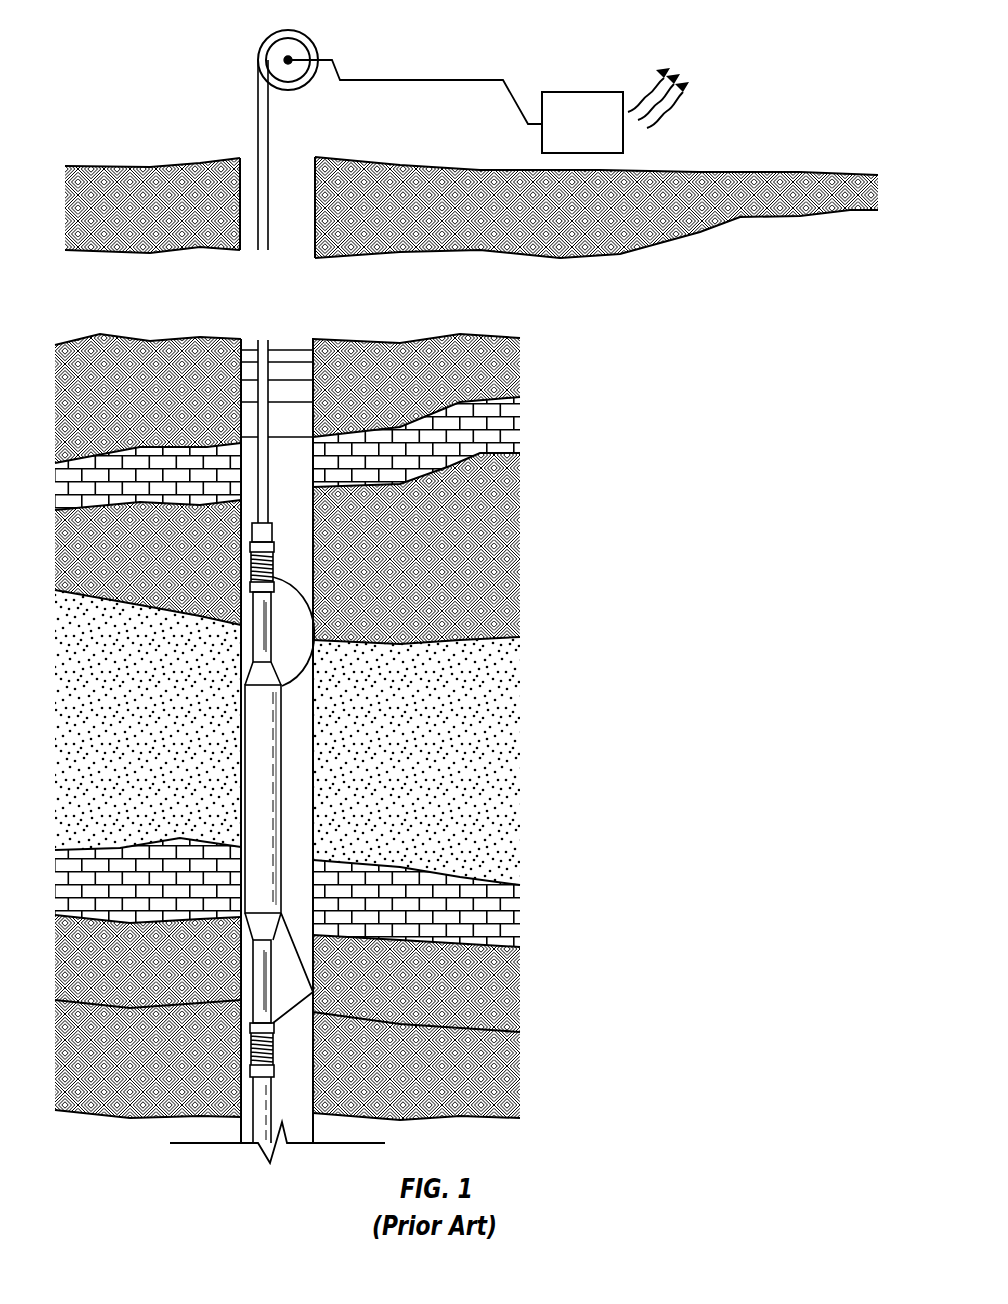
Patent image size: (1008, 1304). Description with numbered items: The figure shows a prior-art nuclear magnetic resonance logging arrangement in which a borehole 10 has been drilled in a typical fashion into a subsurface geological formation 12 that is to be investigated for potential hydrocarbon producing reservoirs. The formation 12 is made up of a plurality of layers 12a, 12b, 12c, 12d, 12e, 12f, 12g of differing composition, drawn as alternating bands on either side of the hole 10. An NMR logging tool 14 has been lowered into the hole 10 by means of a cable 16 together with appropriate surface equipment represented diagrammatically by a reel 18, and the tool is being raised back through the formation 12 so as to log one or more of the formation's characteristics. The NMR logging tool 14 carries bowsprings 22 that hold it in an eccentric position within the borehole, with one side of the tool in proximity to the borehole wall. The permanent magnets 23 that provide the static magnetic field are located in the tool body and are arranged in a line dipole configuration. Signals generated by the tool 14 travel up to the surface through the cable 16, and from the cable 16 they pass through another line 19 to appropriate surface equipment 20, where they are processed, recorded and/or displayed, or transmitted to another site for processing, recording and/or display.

The borehole 10 is at (301, 216).
The subsurface geological formation 12 is at (354, 748).
The formation layer 12a is at (515, 373).
The formation layer 12b is at (510, 432).
The formation layer 12c is at (495, 548).
The formation layer 12d is at (487, 730).
The formation layer 12e is at (500, 918).
The formation layer 12f is at (500, 987).
The formation layer 12g is at (497, 1078).
The NMR logging tool 14 is at (245, 913).
The cable 16 is at (258, 126).
The reel 18 is at (299, 31).
The line 19 is at (418, 80).
The surface equipment 20 is at (570, 92).
The bowsprings 22 is at (313, 658).
The permanent magnets 23 is at (281, 780).